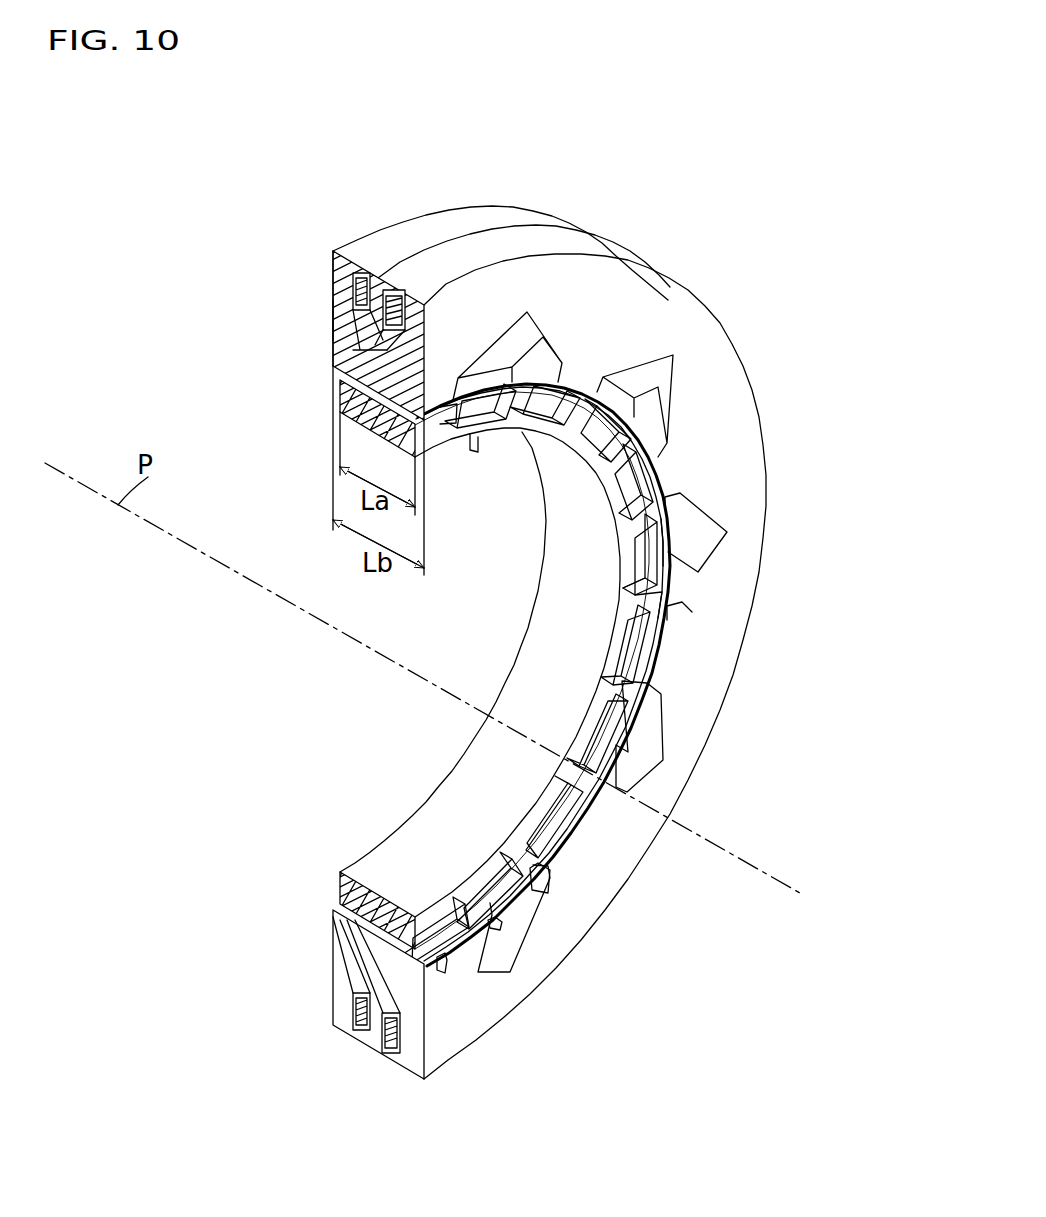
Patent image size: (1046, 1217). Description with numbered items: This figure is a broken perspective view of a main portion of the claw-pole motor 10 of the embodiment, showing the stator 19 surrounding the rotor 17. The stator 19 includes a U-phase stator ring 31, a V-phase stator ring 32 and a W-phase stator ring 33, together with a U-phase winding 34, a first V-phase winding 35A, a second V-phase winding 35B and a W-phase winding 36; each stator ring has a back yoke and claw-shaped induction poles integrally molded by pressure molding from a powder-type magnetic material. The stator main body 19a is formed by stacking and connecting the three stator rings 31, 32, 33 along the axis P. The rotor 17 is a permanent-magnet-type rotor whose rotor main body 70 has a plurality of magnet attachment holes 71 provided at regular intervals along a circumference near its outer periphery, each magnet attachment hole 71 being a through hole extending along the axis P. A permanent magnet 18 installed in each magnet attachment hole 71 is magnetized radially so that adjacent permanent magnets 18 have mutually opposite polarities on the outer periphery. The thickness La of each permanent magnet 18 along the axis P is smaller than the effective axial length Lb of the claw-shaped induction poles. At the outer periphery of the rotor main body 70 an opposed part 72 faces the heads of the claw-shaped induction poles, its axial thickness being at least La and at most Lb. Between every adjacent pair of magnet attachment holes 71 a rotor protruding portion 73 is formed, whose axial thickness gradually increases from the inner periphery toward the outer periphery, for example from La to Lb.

The claw-pole motor 10 is at (678, 158).
The rotor 17 is at (478, 432).
The permanent magnet 18 is at (602, 745).
The stator 19 is at (333, 289).
The stator main body 19a is at (333, 318).
The U-phase stator ring 31 is at (470, 278).
The V-phase stator ring 32 is at (445, 250).
The W-phase stator ring 33 is at (418, 228).
The U-phase winding 34 is at (395, 298).
The first V-phase winding 35A is at (375, 296).
The second V-phase winding 35B is at (358, 298).
The W-phase winding 36 is at (350, 292).
The rotor main body 70 is at (345, 405).
The magnet attachment hole 71 is at (660, 625).
The opposed part 72 is at (668, 535).
The rotor protruding portion 73 is at (651, 583).